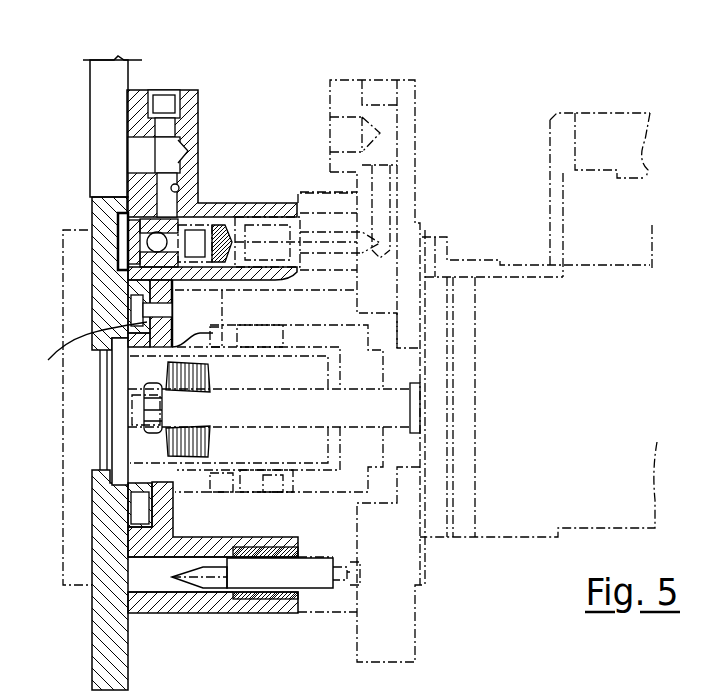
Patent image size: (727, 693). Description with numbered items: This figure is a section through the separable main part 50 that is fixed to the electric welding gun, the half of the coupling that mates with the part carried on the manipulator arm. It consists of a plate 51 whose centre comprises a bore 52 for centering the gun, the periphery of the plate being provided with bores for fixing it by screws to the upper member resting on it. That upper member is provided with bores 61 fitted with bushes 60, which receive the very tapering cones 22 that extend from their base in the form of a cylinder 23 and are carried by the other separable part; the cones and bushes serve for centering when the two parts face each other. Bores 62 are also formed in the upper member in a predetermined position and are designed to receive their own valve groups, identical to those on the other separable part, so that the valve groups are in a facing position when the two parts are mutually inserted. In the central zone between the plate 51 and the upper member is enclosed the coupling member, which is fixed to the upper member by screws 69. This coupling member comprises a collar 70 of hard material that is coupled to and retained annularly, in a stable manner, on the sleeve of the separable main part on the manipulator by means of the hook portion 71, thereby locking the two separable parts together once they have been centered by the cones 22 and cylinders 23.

The cone 22 is at (213, 613).
The cylinder 23 is at (327, 575).
The separable main part 50 is at (218, 200).
The plate 51 is at (106, 286).
The bore 52 is at (97, 467).
The bush 60 is at (277, 612).
The bore 61 is at (178, 588).
The bore 62 is at (174, 184).
The screw 69 is at (137, 316).
The collar 70 is at (140, 505).
The hook portion 71 is at (167, 341).